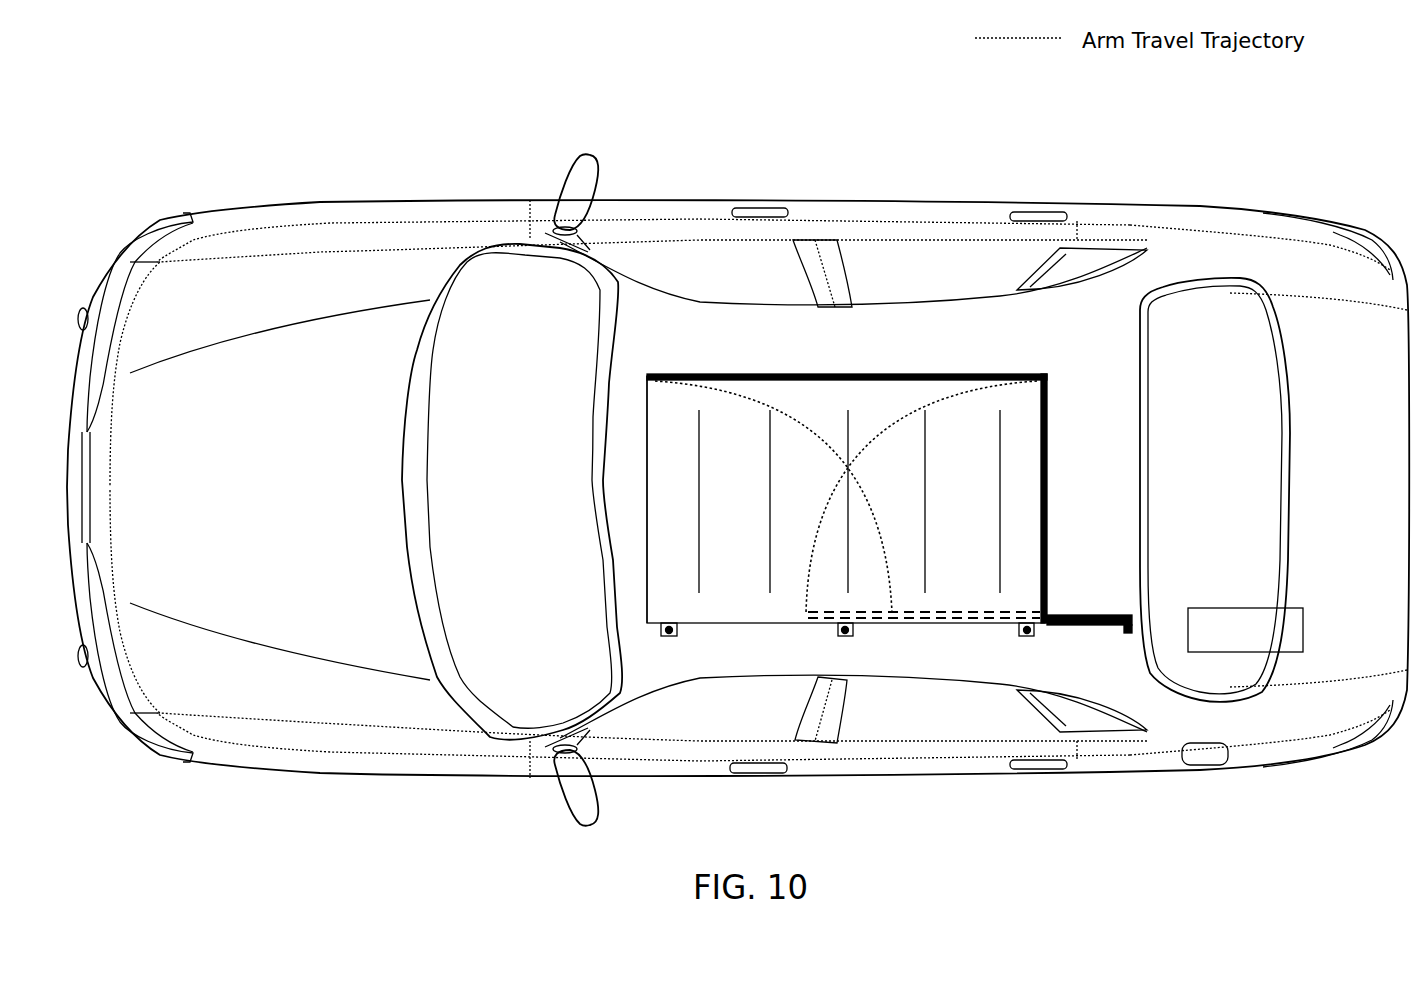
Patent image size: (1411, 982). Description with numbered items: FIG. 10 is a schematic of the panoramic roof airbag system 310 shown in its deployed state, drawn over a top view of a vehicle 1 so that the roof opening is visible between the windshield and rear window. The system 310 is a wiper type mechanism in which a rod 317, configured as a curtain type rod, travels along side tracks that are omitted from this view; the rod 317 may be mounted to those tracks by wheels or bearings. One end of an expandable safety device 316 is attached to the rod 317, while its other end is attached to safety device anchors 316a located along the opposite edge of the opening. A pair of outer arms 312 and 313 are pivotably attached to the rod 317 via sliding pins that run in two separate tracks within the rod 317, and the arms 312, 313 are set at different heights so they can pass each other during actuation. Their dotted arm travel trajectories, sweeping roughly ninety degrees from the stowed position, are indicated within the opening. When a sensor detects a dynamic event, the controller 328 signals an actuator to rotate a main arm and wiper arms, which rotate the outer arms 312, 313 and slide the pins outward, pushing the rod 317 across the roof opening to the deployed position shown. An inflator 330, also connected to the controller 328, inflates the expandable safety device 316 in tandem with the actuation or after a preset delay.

The vehicle 1 is at (255, 146).
The panoramic roof airbag system 310 is at (632, 333).
The first outer arm 312 is at (650, 440).
The second outer arm 313 is at (1047, 445).
The expandable safety device 316 is at (877, 423).
The safety device anchors 316a is at (1027, 637).
The rod 317 is at (845, 380).
The controller 328 is at (1136, 640).
The inflator 330 is at (1080, 628).